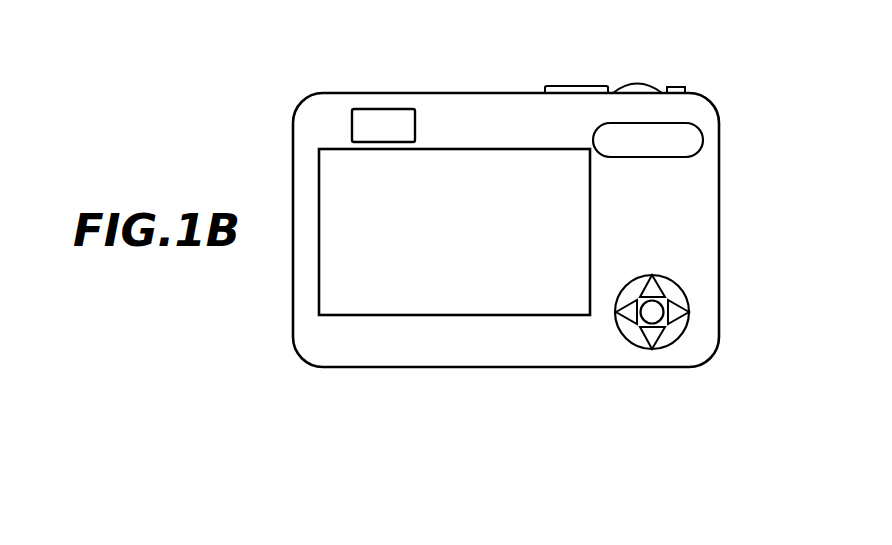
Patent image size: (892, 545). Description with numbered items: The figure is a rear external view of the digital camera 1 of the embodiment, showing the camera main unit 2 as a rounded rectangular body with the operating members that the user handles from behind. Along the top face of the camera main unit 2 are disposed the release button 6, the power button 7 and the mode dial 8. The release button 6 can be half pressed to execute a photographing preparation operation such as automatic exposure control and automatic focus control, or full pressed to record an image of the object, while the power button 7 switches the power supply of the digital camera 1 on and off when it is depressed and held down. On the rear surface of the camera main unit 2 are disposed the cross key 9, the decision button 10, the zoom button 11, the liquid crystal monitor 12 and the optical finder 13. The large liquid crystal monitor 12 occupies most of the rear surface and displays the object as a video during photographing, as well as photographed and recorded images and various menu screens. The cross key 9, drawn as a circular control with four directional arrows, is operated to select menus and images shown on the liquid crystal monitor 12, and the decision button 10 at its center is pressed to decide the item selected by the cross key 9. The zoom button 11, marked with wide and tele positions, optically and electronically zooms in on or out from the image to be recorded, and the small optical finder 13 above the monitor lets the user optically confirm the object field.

The digital camera 1 is at (314, 78).
The camera main unit 2 is at (719, 238).
The release button 6 is at (635, 84).
The power button 7 is at (677, 87).
The mode dial 8 is at (567, 86).
The cross key 9 is at (690, 294).
The decision button 10 is at (664, 324).
The zoom button 11 is at (704, 140).
The liquid crystal monitor 12 is at (474, 305).
The optical finder 13 is at (382, 109).